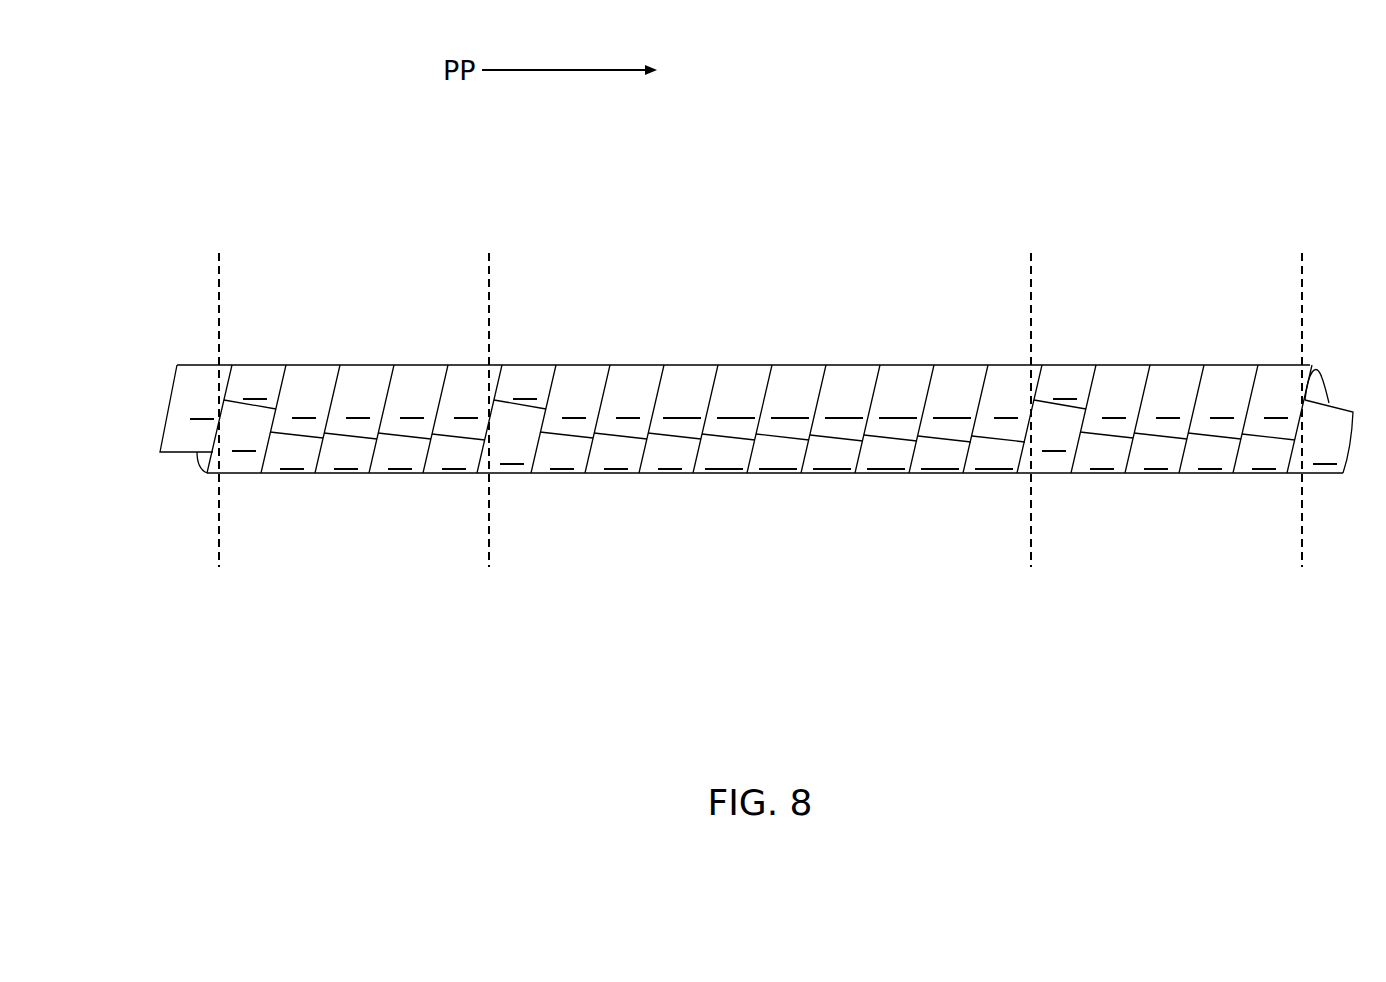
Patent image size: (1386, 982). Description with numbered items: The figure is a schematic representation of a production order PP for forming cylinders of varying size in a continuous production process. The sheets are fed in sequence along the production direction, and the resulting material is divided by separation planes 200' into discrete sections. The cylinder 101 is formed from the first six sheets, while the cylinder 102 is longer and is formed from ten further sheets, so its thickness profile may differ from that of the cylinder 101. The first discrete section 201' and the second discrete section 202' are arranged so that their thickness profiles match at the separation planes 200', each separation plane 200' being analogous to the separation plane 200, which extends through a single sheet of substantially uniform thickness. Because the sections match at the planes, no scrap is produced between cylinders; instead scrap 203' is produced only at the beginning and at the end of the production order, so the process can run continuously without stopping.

The separation plane 200' is at (670, 392).
The separation plane 200 is at (1344, 392).
The cylinder 101 is at (314, 355).
The cylinder 102 is at (796, 357).
The first discrete section 201' is at (748, 521).
The second discrete section 202' is at (760, 523).
The scrap 203' is at (756, 521).